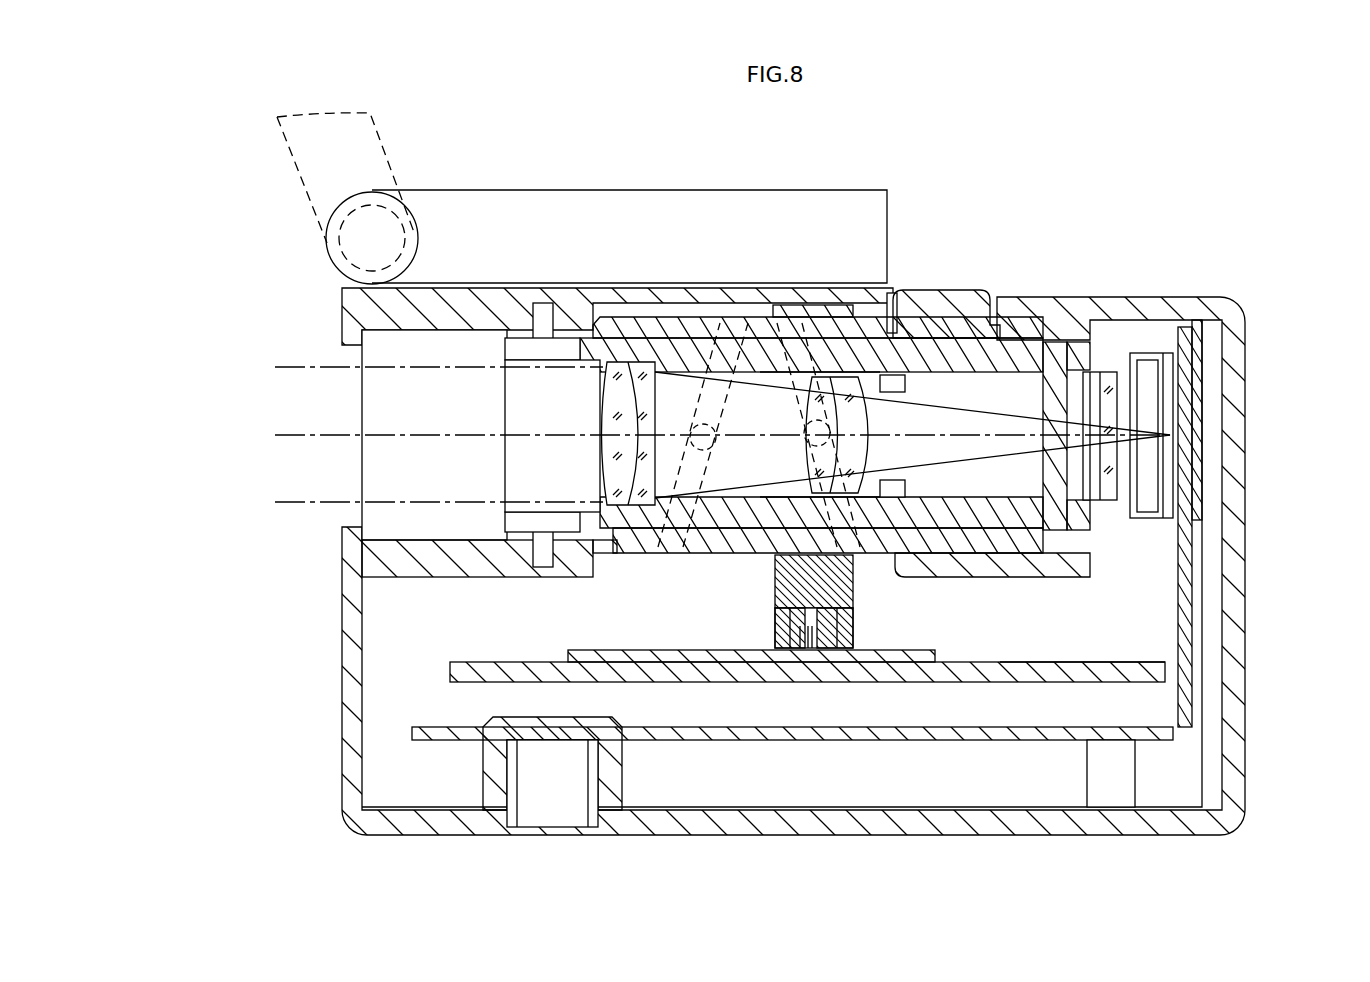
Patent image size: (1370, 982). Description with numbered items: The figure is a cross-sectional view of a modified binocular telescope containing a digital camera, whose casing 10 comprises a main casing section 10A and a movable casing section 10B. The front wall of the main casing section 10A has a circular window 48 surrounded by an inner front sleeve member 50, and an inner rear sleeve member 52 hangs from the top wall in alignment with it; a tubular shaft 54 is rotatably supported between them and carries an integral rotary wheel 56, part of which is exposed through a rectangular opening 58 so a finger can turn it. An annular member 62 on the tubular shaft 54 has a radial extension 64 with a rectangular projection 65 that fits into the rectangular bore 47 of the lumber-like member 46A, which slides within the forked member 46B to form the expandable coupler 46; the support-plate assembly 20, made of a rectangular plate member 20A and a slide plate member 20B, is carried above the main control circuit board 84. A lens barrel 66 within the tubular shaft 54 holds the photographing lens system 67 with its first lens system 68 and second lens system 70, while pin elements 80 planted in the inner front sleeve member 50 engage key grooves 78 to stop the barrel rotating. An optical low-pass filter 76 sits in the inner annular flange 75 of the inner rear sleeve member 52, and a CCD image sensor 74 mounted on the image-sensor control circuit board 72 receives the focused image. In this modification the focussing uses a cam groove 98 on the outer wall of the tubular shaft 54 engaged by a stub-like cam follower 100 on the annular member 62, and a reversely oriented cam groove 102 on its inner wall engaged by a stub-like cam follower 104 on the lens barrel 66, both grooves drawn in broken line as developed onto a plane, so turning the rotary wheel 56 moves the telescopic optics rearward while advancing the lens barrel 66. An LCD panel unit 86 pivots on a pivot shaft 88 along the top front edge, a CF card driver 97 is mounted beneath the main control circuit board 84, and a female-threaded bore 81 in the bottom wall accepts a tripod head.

The casing 10 is at (312, 312).
The main casing section 10A is at (1103, 296).
The movable casing section 10B is at (1248, 570).
The support-plate assembly 20 is at (807, 689).
The rectangular plate member 20A is at (1080, 660).
The slide plate member 20B is at (600, 648).
The expandable coupler 46 is at (816, 658).
The lumber-like member 46A is at (855, 615).
The forked member 46B is at (855, 630).
The rectangular bore 47 is at (815, 648).
The circular window 48 is at (340, 512).
The inner front sleeve member 50 is at (490, 577).
The inner rear sleeve member 52 is at (1020, 577).
The tubular shaft 54 is at (712, 305).
The rotary wheel 56 is at (960, 290).
The rectangular opening 58 is at (900, 300).
The annular member 62 is at (800, 315).
The radial extension 64 is at (775, 580).
The rectangular projection 65 is at (797, 648).
The lens barrel 66 is at (975, 495).
The photographing lens system 67 is at (600, 396).
The first lens system 68 is at (600, 470).
The second lens system 70 is at (872, 416).
The image-sensor control circuit board 72 is at (1176, 615).
The CCD image sensor 74 is at (1148, 520).
The inner annular flange 75 is at (1073, 362).
The optical low-pass filter 76 is at (1100, 502).
The key grooves 78 is at (505, 520).
The pin elements 80 is at (545, 300).
The female-threaded bore 81 is at (520, 808).
The main control circuit board 84 is at (785, 741).
The LCD panel unit 86 is at (707, 188).
The pivot shaft 88 is at (400, 238).
The CF card driver 97 is at (860, 784).
The cam groove 98 is at (790, 393).
The stub-like cam follower 100 is at (810, 460).
The cam groove 102 is at (728, 452).
The stub-like cam follower 104 is at (720, 393).